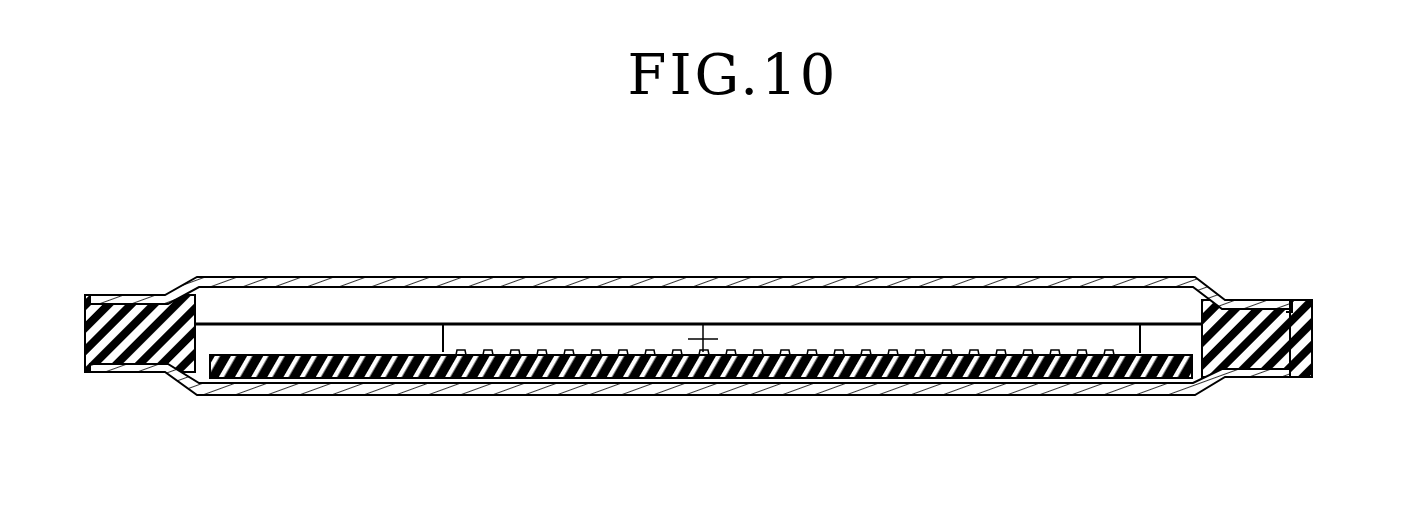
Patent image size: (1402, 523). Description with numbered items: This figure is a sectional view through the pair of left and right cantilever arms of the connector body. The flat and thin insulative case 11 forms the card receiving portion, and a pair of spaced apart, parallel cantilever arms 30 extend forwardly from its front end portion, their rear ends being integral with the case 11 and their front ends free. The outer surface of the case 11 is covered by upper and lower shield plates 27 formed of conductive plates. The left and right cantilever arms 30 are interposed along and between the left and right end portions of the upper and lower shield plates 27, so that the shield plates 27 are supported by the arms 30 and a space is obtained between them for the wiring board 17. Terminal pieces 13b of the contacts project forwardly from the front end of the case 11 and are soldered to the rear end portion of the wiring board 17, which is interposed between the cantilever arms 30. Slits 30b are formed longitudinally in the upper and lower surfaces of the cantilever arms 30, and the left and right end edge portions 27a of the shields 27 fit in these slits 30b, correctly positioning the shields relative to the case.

The insulative case 11 is at (607, 325).
The terminal pieces 13b is at (1030, 352).
The wiring board 17 is at (582, 367).
The shield plates 27 is at (914, 282).
The end edge portions 27a is at (1292, 300).
The cantilever arms 30 is at (135, 318).
The slits 30b is at (1312, 335).